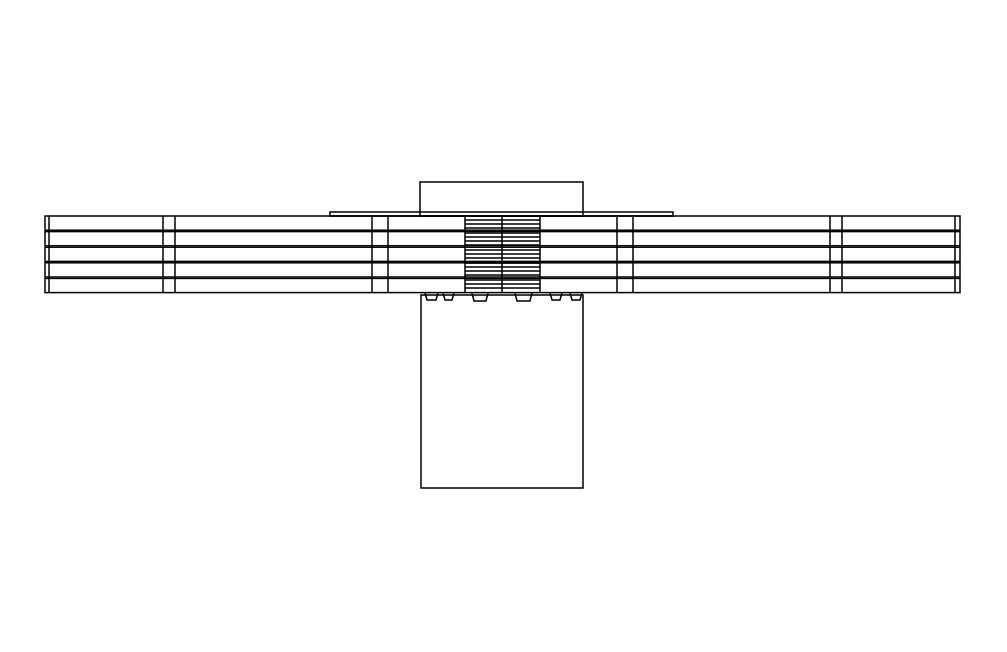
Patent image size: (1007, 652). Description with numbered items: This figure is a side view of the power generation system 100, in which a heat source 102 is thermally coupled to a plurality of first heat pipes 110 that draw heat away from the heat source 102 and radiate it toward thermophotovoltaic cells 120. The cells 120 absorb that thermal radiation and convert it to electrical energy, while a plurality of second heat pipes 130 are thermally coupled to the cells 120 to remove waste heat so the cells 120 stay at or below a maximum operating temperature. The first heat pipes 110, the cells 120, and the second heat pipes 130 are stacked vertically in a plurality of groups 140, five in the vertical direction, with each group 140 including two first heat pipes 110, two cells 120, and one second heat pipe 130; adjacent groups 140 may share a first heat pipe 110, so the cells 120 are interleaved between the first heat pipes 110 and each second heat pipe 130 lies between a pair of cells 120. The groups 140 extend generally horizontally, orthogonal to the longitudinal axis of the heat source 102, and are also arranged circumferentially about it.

The power generation system 100 is at (222, 98).
The heat source 102 is at (510, 453).
The first heat pipes 110 is at (533, 227).
The thermophotovoltaic cells 120 is at (512, 283).
The second heat pipes 130 is at (757, 252).
The groups 140 is at (466, 222).